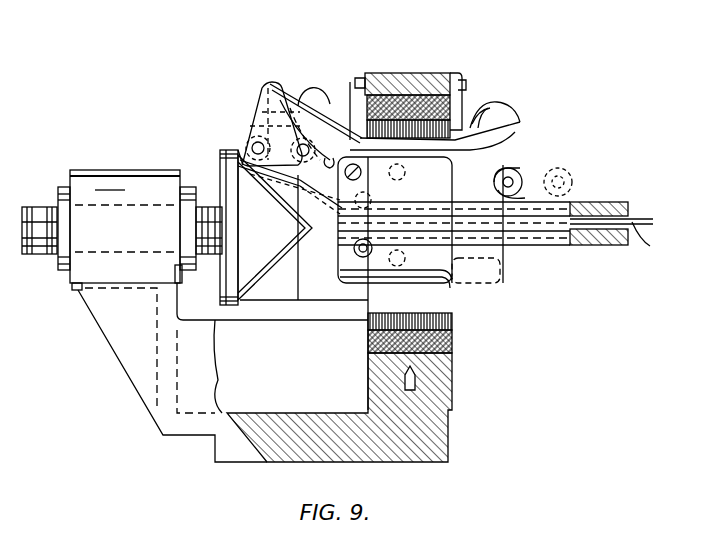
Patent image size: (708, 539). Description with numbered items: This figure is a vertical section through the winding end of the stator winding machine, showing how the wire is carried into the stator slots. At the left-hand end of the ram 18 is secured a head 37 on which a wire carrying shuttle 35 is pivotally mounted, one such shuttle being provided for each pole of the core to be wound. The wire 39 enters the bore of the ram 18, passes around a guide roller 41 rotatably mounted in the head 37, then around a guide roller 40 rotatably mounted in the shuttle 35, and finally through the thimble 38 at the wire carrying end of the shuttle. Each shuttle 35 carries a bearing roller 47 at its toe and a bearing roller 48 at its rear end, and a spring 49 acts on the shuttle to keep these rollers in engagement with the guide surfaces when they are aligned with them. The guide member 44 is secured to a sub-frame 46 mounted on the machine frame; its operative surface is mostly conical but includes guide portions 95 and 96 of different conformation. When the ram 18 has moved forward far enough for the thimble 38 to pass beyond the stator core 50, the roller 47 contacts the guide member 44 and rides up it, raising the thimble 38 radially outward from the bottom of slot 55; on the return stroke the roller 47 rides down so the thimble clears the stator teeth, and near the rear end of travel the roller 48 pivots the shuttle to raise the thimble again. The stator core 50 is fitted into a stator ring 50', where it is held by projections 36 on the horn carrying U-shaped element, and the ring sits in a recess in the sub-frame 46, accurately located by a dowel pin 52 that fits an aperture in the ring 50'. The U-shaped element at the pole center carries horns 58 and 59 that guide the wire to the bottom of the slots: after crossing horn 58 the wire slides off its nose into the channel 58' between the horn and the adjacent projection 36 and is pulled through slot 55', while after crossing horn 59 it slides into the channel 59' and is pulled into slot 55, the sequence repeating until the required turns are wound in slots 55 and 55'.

The ram 18 is at (606, 202).
The wire carrying shuttle 35 is at (505, 166).
The projection 36 is at (380, 68).
The head 37 is at (455, 283).
The thimble 38 is at (268, 84).
The wire 39 is at (288, 88).
The guide roller 40 is at (250, 126).
The guide roller 41 is at (338, 196).
The guide member 44 is at (232, 286).
The sub-frame 46 is at (118, 322).
The bearing roller 47 is at (238, 142).
The bearing roller 48 is at (552, 170).
The spring 49 is at (331, 158).
The stator core 50 is at (452, 81).
The stator ring 50' is at (407, 86).
The dowel pin 52 is at (418, 382).
The slot 55 is at (443, 333).
The slot 55' is at (429, 117).
The horn 58 is at (255, 99).
The channel 58' is at (365, 91).
The horn 59 is at (508, 96).
The channel 59' is at (492, 95).
The guide portion 95 is at (283, 292).
The guide portion 96 is at (283, 190).